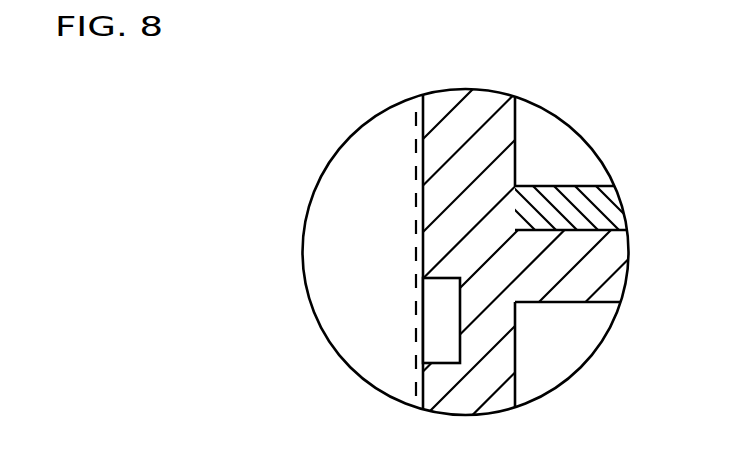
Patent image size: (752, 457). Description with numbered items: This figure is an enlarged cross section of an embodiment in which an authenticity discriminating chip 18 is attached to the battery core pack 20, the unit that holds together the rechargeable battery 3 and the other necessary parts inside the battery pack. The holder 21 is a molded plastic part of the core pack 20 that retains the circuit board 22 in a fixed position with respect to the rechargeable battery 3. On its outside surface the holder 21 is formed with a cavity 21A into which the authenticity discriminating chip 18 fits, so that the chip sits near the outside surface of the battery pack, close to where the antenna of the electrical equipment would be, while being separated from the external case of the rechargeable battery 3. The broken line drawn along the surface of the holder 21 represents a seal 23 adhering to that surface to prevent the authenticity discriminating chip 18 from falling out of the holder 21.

The rechargeable battery 3 is at (562, 338).
The authenticity discriminating chip 18 is at (434, 346).
The battery core pack 20 is at (393, 149).
The holder 21 is at (437, 244).
The cavity 21A is at (462, 339).
The circuit board 22 is at (578, 213).
The gap 23 is at (416, 331).